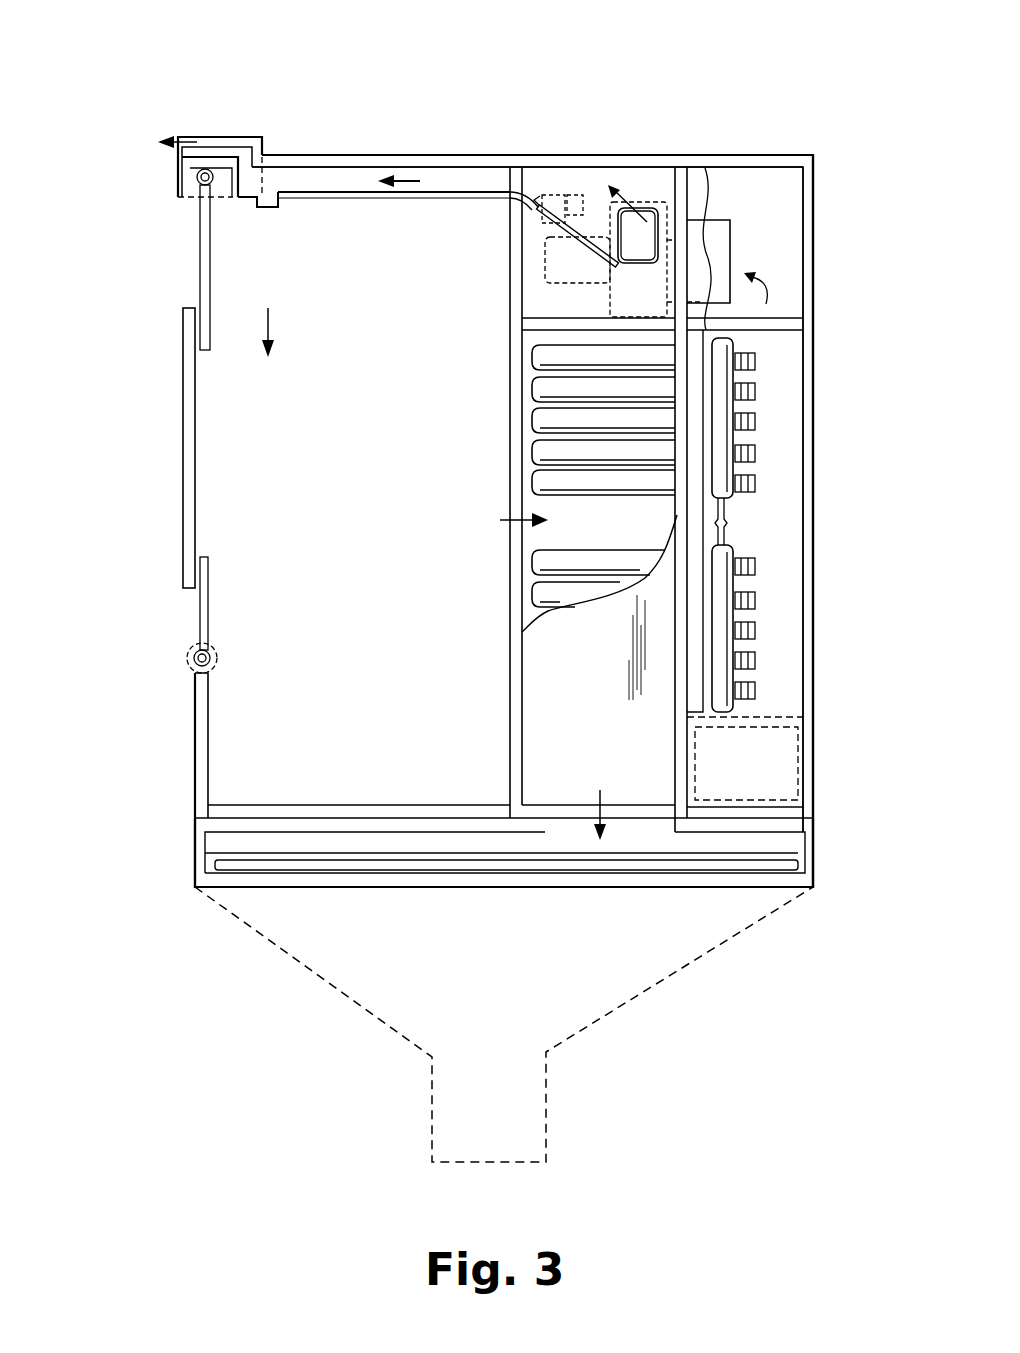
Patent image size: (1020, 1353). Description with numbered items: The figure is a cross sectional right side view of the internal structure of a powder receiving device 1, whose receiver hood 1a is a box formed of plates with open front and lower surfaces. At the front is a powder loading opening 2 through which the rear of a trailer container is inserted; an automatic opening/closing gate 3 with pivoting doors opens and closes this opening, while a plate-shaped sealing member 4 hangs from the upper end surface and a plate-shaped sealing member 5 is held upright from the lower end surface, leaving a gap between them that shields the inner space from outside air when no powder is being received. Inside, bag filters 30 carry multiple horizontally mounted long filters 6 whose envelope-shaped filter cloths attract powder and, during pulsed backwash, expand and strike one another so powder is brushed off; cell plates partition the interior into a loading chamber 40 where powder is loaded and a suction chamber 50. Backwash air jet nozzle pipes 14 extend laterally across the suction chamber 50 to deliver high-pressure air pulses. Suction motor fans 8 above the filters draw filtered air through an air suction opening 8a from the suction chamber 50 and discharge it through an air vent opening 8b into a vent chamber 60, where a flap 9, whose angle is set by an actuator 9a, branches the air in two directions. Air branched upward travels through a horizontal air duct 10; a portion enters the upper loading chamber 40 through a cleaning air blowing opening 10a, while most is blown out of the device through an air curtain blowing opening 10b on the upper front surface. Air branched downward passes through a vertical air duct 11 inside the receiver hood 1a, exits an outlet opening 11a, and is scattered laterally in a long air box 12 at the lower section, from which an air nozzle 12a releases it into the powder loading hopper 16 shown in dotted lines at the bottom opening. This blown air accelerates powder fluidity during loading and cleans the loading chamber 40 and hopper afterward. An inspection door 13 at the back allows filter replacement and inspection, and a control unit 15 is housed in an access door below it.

The powder receiving device 1 is at (766, 60).
The receiver hood 1a is at (448, 160).
The powder loading opening 2 is at (174, 246).
The automatic opening/closing gate 3 is at (184, 507).
The sealing member 4 is at (211, 286).
The sealing member 5 is at (208, 622).
The long filters 6 is at (536, 415).
The suction motor fans 8 is at (612, 300).
The air suction opening 8a is at (732, 242).
The air vent opening 8b is at (650, 212).
The flap 9 is at (548, 240).
The actuator 9a is at (548, 195).
The horizontal air duct 10 is at (312, 178).
The cleaning air blowing opening 10a is at (270, 212).
The air curtain blowing opening 10b is at (220, 137).
The vertical air duct 11 is at (522, 675).
The outlet opening 11a is at (536, 760).
The air box 12 is at (194, 852).
The air nozzle 12a is at (398, 860).
The inspection door 13 is at (814, 437).
The backwash air jet nozzle pipes 14 is at (748, 392).
The control unit 15 is at (800, 778).
The powder loading hopper 16 is at (643, 990).
The bag filters 30 is at (746, 520).
The loading chamber 40 is at (214, 440).
The suction chamber 50 is at (787, 562).
The vent chamber 60 is at (620, 168).